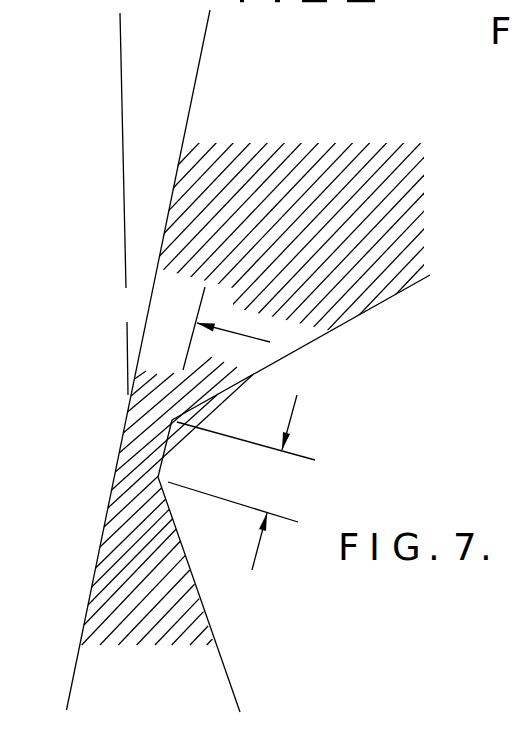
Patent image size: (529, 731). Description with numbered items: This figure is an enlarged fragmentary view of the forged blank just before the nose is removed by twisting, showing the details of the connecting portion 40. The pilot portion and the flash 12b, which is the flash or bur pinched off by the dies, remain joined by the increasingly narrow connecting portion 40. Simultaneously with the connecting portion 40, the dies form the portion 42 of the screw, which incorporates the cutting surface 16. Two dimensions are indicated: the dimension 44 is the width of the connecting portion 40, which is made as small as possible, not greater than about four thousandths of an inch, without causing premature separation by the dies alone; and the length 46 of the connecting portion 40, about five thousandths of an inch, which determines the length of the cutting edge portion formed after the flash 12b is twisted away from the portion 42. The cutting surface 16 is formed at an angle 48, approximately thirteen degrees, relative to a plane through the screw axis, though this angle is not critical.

The cutting surface 16 is at (193, 225).
The flash 12b is at (190, 618).
The connecting portion 40 is at (128, 443).
The portion of the screw 42 is at (367, 293).
The width dimension of the connecting portion 44 is at (148, 310).
The length of the connecting portion 46 is at (295, 413).
The angle of the cutting surface 48 is at (203, 43).